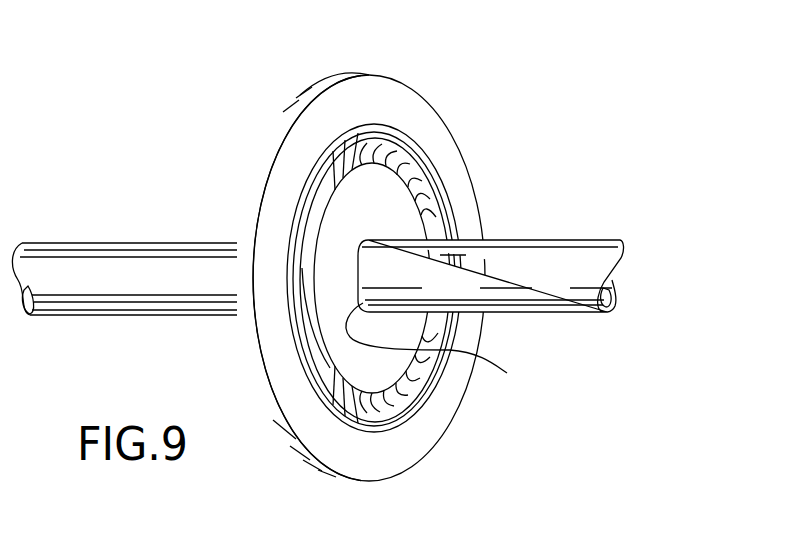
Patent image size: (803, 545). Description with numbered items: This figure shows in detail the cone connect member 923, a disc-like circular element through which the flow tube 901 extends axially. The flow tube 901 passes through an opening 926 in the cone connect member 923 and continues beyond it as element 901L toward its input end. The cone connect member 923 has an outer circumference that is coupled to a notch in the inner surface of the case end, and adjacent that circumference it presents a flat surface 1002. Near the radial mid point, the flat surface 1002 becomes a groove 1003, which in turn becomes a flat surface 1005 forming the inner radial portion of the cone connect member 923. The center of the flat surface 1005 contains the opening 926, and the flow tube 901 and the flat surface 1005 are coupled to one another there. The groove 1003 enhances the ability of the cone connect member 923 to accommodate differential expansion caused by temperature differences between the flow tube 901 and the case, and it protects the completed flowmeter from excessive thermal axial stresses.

The flow tube 901 is at (491, 276).
The flow tube extension 901L is at (168, 275).
The cone connect member 923 is at (475, 132).
The opening 926 is at (444, 345).
The flat surface 1002 is at (333, 110).
The groove 1003 is at (433, 198).
The flat surface 1005 is at (377, 370).